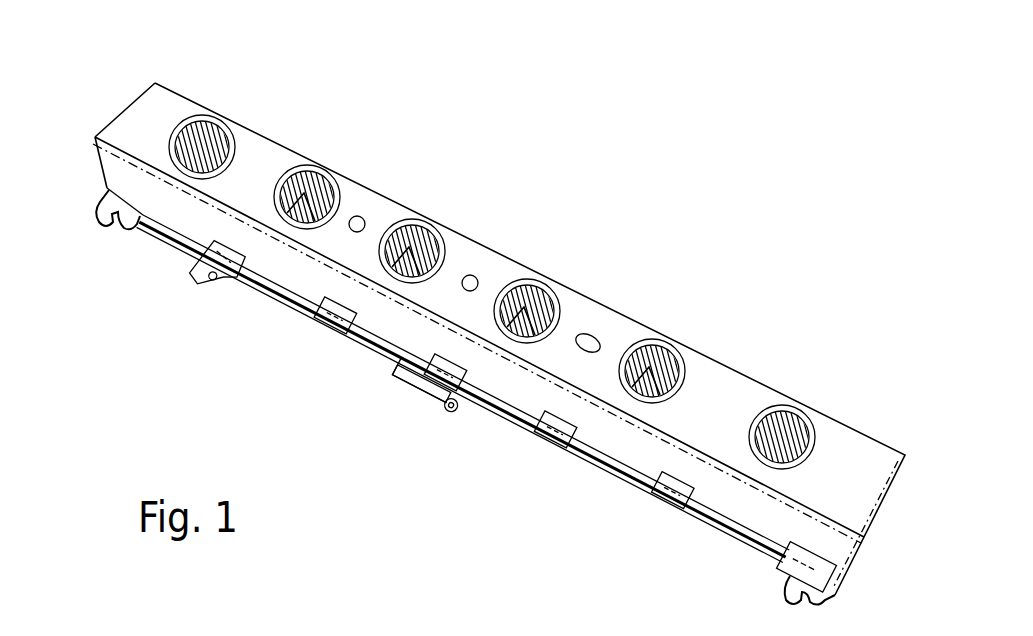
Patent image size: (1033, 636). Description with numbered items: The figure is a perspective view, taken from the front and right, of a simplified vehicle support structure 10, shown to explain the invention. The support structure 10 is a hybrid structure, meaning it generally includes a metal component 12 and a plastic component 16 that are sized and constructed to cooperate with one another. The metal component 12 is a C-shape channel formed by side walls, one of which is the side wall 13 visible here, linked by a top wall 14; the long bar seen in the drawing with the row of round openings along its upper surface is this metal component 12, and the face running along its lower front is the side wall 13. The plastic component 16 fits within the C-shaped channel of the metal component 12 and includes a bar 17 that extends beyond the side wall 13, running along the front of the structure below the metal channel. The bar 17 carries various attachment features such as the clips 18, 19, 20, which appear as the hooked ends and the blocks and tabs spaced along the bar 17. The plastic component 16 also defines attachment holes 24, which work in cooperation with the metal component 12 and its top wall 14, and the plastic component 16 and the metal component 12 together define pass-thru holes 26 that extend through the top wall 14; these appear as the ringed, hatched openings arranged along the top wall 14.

The vehicle support structure 10 is at (672, 212).
The metal component 12 is at (500, 247).
The side wall 13 is at (123, 176).
The top wall 14 is at (160, 100).
The plastic component 16 is at (466, 425).
The bar 17 is at (485, 398).
The clip 18 is at (118, 232).
The clip 19 is at (217, 267).
The clip 20 is at (427, 386).
The attachment holes 24 is at (218, 118).
The pass-thru holes 26 is at (327, 172).